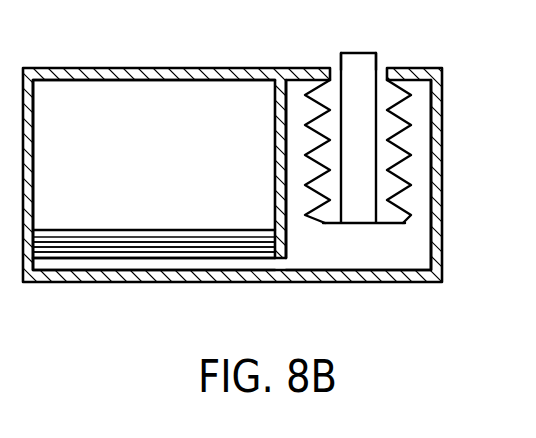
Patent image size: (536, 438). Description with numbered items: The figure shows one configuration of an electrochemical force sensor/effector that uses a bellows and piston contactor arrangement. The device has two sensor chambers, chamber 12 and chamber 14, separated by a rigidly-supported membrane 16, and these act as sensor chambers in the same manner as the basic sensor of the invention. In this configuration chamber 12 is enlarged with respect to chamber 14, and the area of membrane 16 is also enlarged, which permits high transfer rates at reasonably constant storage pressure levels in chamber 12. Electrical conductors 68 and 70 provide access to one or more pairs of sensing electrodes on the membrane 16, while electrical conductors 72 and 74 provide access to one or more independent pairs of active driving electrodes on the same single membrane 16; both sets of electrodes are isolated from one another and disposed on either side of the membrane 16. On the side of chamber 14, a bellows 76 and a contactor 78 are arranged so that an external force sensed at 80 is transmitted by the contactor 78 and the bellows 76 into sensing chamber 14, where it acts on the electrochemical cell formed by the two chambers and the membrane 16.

The sensor chamber 12 is at (144, 178).
The sensing chamber 14 is at (371, 259).
The rigidly-supported membrane 16 is at (92, 247).
The electrical conductor 68 is at (140, 256).
The electrical conductor 70 is at (152, 253).
The electrical conductor 72 is at (177, 253).
The electrical conductor 74 is at (168, 251).
The bellows 76 is at (402, 151).
The contactor 78 is at (350, 70).
The external force sensing point 80 is at (372, 43).